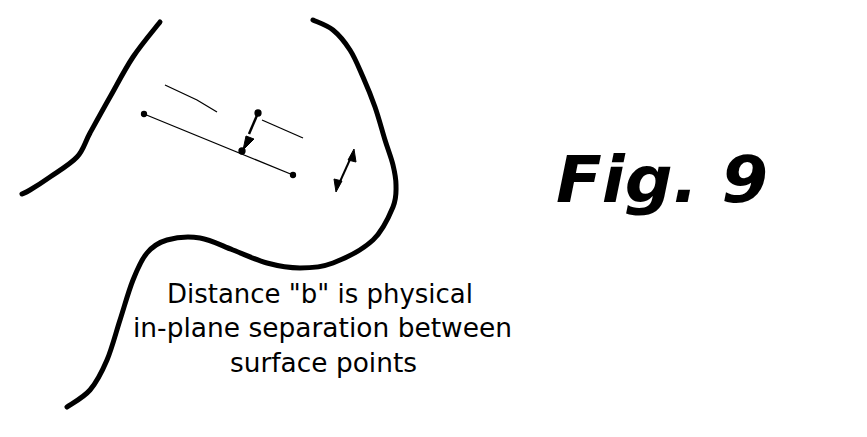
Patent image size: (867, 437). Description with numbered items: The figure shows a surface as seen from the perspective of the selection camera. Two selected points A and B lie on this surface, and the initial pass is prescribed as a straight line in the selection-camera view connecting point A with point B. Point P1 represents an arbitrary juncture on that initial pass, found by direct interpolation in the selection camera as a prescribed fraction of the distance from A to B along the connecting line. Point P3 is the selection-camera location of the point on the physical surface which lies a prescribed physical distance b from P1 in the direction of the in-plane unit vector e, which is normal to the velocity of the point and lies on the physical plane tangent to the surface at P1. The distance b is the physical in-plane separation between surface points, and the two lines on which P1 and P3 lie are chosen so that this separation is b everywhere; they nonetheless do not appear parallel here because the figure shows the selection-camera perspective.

The selection-camera point A is at (137, 118).
The selection-camera point B is at (301, 179).
The intermediate point P1 is at (234, 169).
The point P3 is at (265, 96).
The in-plane unit vector e3 e is at (243, 138).
The prescribed distance b is at (348, 170).